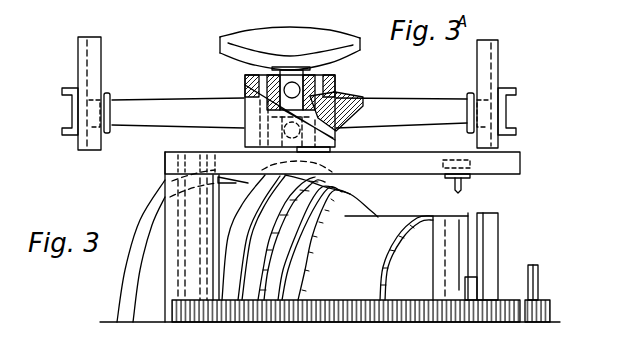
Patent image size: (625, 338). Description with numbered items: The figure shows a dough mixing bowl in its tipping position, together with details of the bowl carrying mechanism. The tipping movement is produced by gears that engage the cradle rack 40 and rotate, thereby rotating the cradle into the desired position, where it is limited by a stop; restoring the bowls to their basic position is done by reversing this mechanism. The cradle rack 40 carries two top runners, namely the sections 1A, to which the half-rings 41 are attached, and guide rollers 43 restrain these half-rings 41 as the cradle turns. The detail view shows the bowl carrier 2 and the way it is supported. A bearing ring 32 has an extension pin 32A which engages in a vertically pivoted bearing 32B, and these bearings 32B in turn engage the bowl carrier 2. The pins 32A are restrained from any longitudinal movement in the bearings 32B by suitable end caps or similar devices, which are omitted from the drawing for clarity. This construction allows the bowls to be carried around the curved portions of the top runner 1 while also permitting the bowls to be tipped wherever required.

In FIG. 3A, the top runner 1 is at (95, 78).
In FIG. 3, the top runner section 1A is at (172, 181).
In FIG. 3A, the bowl carrier 2 is at (407, 107).
In FIG. 3A, the bearing ring 32 is at (243, 48).
In FIG. 3, the bearing ring 32 is at (246, 183).
In FIG. 3A, the extension pin 32A is at (308, 72).
In FIG. 3A, the vertically pivoted bearing 32B is at (322, 98).
In FIG. 3, the cradle rack 40 is at (338, 300).
In FIG. 3, the half-rings 41 is at (403, 166).
In FIG. 3, the guide rollers 43 is at (467, 178).